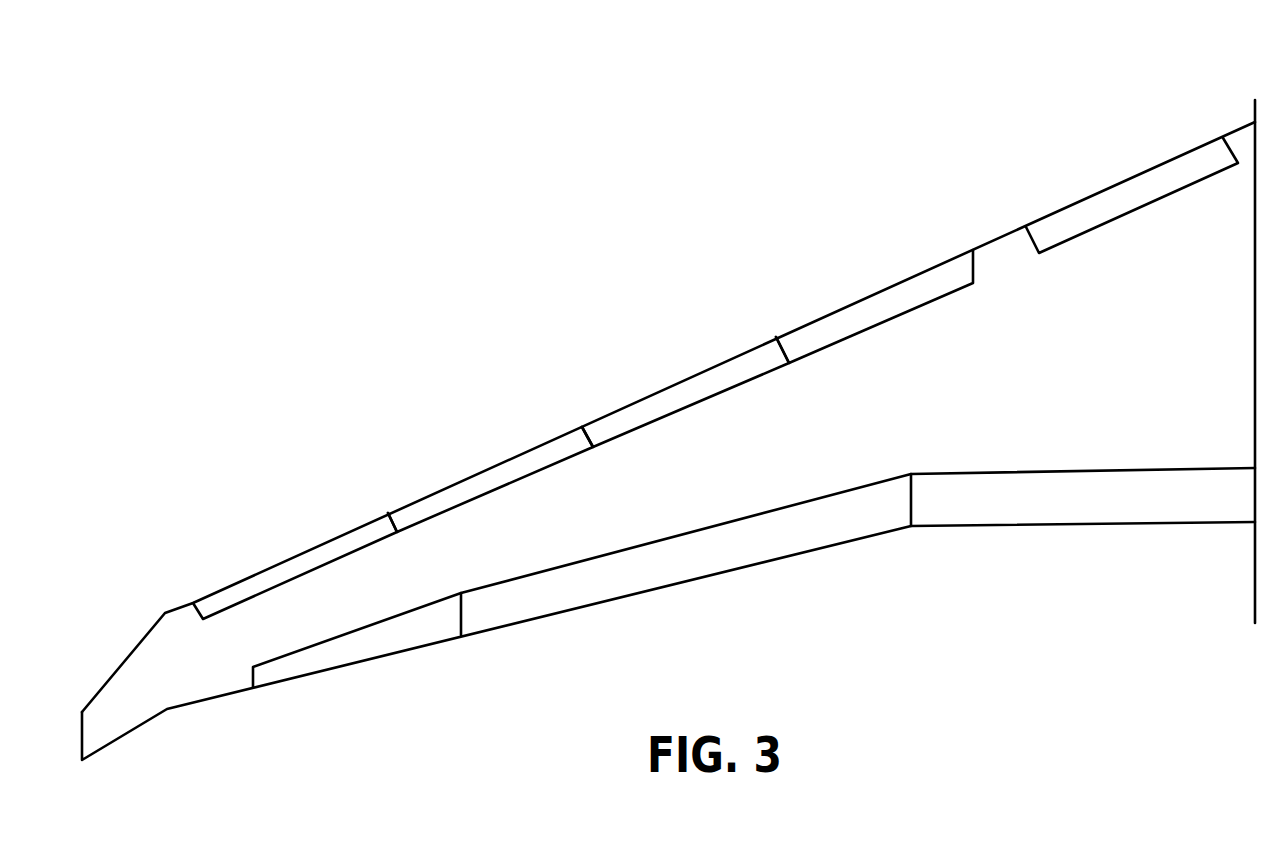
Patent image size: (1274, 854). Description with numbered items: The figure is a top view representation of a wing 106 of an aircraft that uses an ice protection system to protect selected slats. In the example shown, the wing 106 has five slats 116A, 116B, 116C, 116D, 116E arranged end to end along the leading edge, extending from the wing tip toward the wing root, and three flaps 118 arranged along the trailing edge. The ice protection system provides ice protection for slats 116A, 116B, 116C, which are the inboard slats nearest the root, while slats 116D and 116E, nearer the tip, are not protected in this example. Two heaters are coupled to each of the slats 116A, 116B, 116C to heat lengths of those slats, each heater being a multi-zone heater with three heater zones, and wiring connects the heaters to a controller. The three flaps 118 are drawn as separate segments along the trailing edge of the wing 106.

The wing 106 is at (805, 454).
The slat 116A is at (1111, 194).
The slat 116B is at (859, 304).
The slat 116C is at (665, 392).
The slat 116D is at (472, 478).
The slat 116E is at (289, 559).
The flap 118 is at (1137, 509).